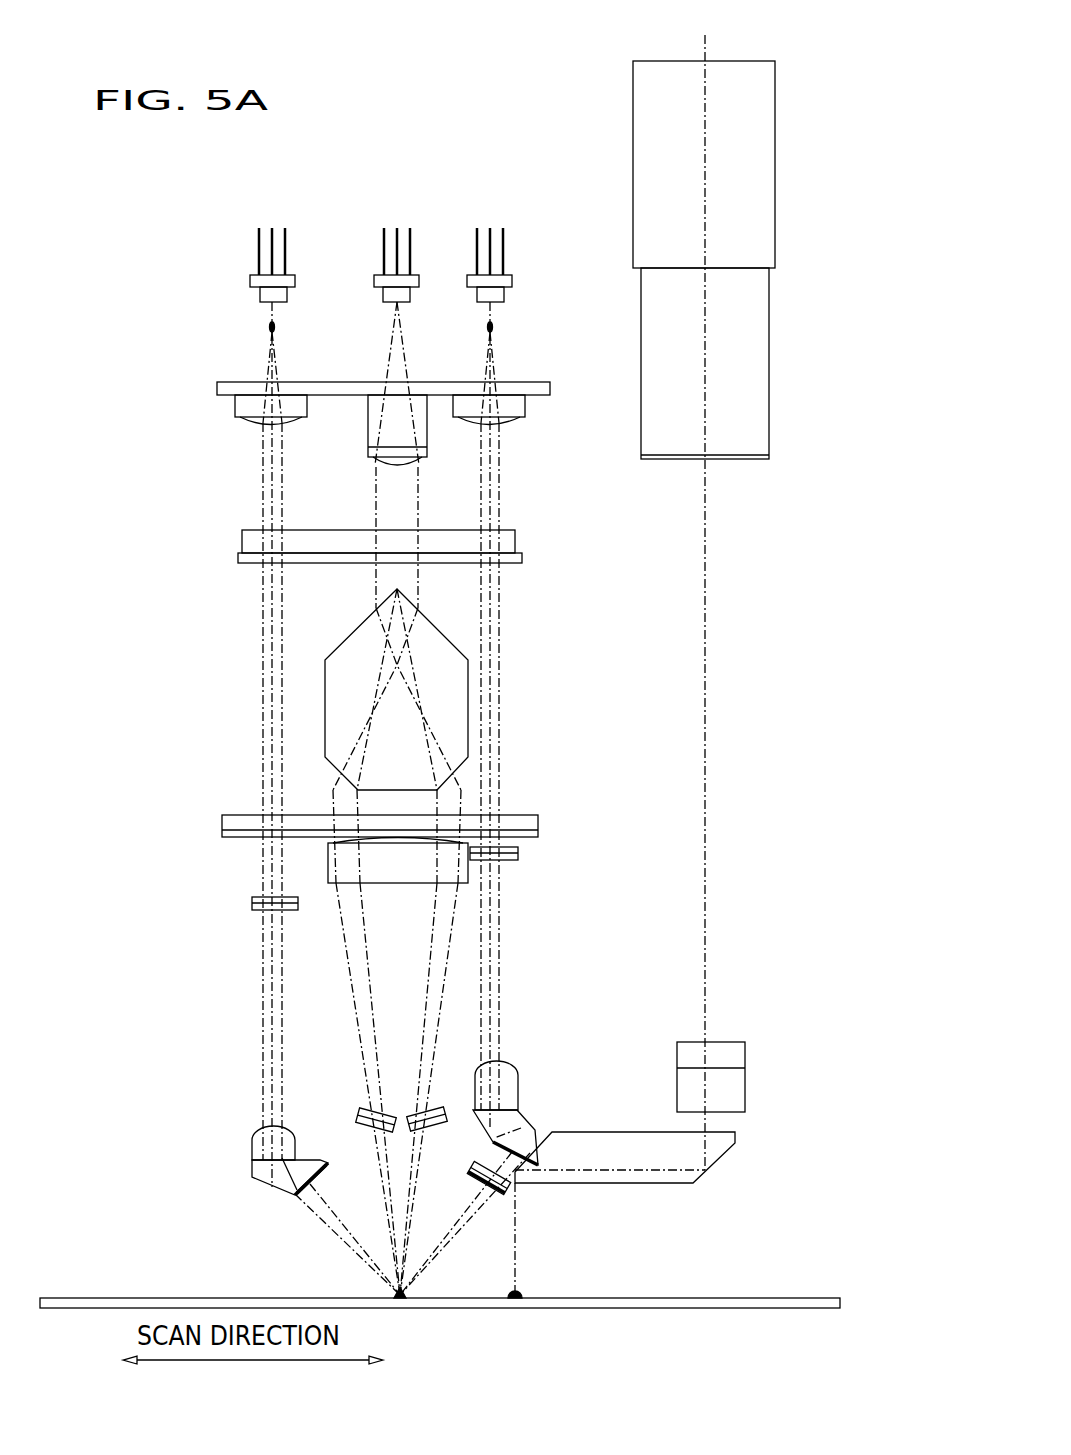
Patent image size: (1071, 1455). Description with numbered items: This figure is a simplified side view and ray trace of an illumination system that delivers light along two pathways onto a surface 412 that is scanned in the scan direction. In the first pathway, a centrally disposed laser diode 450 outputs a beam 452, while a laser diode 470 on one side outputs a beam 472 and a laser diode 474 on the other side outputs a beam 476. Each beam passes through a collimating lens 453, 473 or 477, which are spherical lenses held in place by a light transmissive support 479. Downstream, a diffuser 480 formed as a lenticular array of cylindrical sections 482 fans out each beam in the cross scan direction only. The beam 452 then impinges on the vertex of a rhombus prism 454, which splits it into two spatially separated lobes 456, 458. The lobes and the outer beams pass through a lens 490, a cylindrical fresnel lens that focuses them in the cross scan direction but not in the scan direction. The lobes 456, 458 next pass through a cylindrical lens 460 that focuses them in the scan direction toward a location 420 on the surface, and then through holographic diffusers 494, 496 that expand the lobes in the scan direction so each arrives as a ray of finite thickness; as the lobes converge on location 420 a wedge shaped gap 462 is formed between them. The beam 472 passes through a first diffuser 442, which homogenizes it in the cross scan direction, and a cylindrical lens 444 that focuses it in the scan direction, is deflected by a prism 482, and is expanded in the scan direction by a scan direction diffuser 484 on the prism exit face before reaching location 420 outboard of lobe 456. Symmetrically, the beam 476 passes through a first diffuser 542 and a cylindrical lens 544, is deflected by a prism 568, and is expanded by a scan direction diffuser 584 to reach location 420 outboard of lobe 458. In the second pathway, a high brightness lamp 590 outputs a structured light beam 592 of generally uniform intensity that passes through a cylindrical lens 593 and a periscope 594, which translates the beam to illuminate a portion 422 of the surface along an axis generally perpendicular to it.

The second pathway / surface 412 is at (827, 197).
The location 420 is at (405, 1308).
The portion 422 is at (517, 1303).
The first diffuser 442 is at (252, 903).
The cylindrical lens 444 is at (252, 1147).
The laser diodes 450 is at (374, 281).
The beams 452 is at (395, 352).
The collimating lens 453 is at (377, 407).
The rhombus prism 454 is at (350, 642).
The lobe 456 is at (343, 800).
The lobe 458 is at (453, 798).
The cylindrical lens 460 is at (330, 875).
The wedge shaped gap 462 is at (397, 978).
The laser diodes 470 is at (250, 281).
The beams 472 is at (268, 330).
The collimating lens 473 is at (242, 402).
The laser diodes 474 is at (512, 281).
The beams 476 is at (492, 338).
The collimating lens 477 is at (517, 403).
The light transmissive support 479 is at (222, 383).
The diffuser 480 is at (540, 542).
The cylindrical section / prism 482 is at (242, 540).
The scan direction diffuser 484 is at (300, 1200).
The lens 490 is at (530, 813).
The diffuser 494 is at (358, 1112).
The diffuser 496 is at (440, 1108).
The first diffuser 542 is at (518, 852).
The cylindrical lens 544 is at (518, 1060).
The prism 568 is at (533, 1145).
The scan direction diffuser 584 is at (508, 1197).
The high brightness lamp 590 is at (756, 424).
The structured light beam 592 is at (707, 602).
The cylindrical lens 593 is at (733, 1087).
The periscope 594 is at (718, 1147).